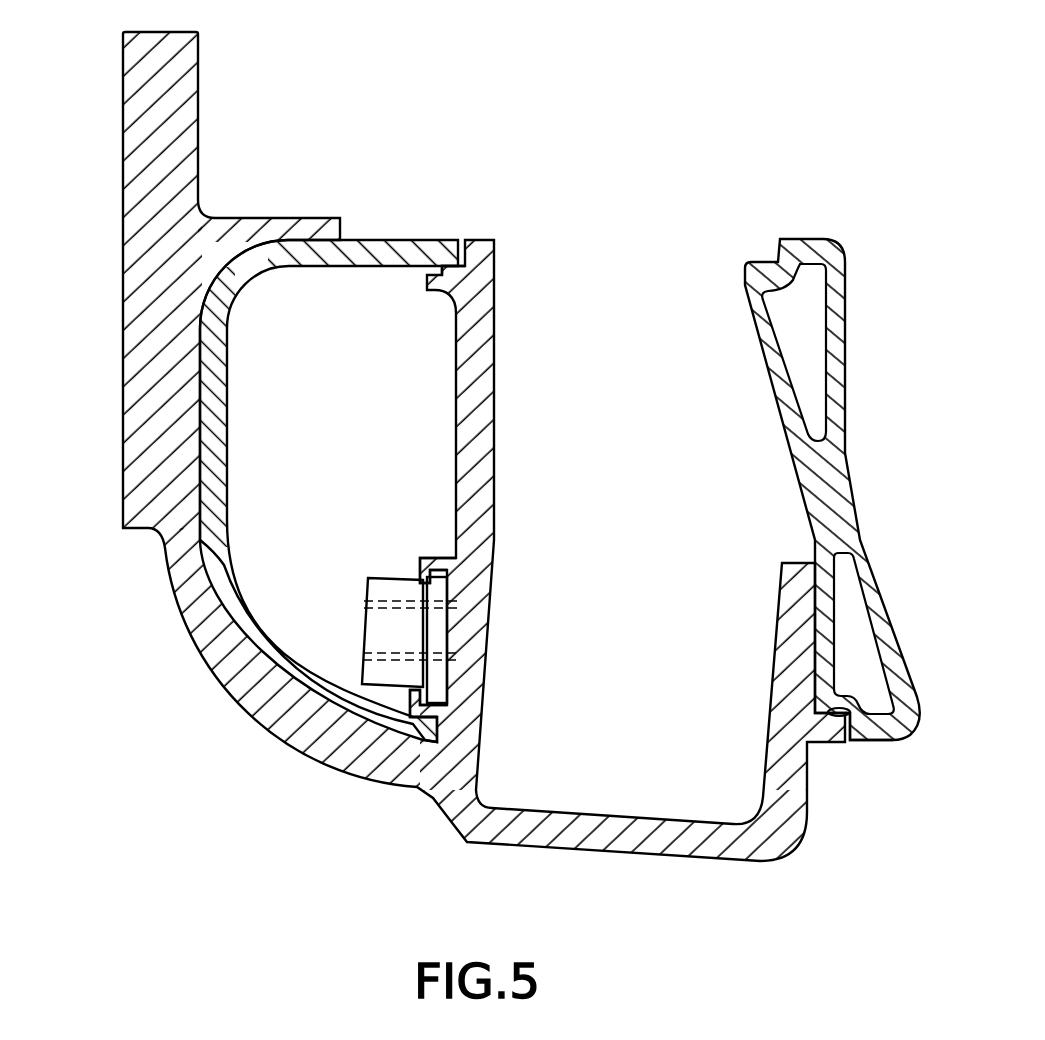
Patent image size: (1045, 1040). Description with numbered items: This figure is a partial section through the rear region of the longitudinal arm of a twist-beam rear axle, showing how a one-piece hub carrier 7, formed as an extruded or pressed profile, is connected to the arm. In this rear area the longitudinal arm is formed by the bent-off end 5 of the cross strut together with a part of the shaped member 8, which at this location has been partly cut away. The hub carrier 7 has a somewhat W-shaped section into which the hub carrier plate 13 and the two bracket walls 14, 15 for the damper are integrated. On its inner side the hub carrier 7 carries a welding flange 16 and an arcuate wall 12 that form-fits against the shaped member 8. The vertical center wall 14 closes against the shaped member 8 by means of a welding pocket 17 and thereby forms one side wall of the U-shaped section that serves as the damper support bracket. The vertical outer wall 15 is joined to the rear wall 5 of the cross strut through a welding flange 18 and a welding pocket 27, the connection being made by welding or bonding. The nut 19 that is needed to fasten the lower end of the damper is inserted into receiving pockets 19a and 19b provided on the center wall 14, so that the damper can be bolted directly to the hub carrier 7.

The bent-off end of the cross strut 5 is at (833, 470).
The hub carrier 7 is at (88, 196).
The shaped member 8 is at (363, 250).
The arcuate wall 12 is at (270, 707).
The hub carrier plate 13 is at (163, 358).
The vertical center wall 14 is at (483, 418).
The vertical outer wall 15 is at (790, 590).
The welding flange 16 is at (277, 227).
The welding pocket 17 is at (448, 268).
The welding flange 18 is at (833, 730).
The clip 19 is at (380, 630).
The receiving pocket 19a is at (440, 570).
The receiving pocket 19b is at (440, 710).
The welding pocket 27 is at (862, 741).